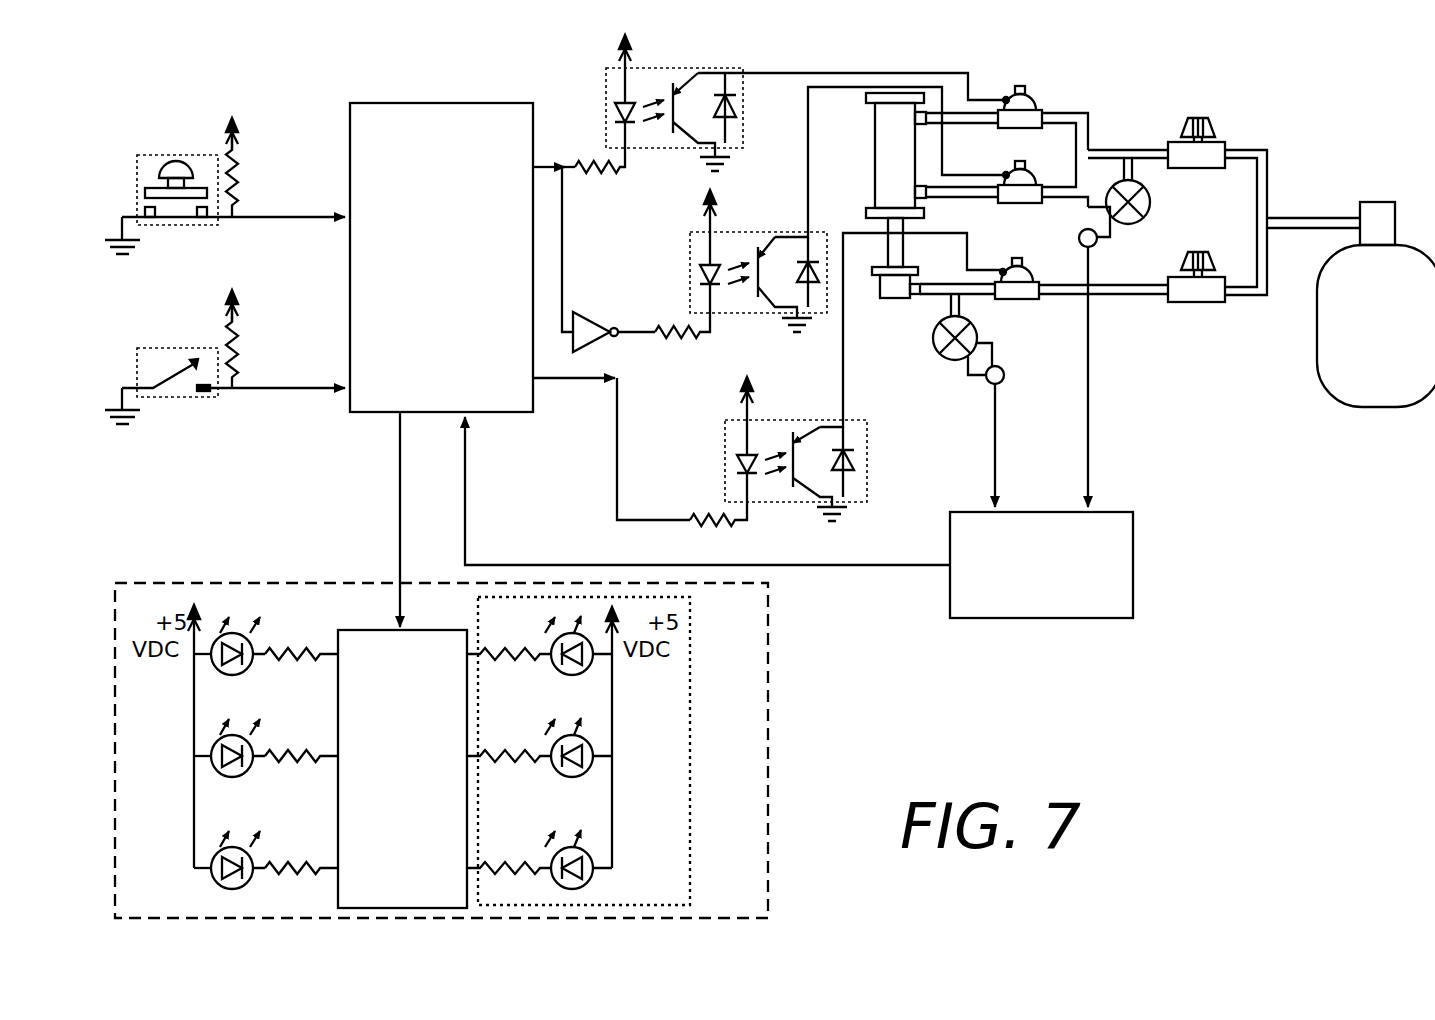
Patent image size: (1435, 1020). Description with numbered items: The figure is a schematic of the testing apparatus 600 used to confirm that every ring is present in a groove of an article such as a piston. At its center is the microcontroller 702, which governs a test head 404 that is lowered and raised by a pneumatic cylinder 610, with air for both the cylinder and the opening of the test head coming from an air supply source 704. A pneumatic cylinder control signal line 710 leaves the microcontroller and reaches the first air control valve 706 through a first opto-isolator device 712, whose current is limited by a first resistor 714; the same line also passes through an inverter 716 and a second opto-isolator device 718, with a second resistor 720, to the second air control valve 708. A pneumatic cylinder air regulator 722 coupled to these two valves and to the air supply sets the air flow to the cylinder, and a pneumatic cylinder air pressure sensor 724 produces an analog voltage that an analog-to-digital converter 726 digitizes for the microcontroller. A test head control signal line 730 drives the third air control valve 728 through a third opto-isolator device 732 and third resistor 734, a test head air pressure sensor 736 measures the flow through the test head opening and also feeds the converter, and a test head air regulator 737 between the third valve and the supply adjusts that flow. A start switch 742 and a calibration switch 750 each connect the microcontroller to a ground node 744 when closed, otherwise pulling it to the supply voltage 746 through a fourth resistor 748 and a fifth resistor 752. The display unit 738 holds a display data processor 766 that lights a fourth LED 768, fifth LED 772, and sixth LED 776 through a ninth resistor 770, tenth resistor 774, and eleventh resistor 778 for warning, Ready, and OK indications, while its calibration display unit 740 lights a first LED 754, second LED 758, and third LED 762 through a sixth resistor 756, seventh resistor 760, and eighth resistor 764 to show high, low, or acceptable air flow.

The testing apparatus 600 is at (1252, 67).
The test head 404 is at (895, 300).
The pneumatic cylinder 610 is at (886, 146).
The microcontroller 702 is at (442, 126).
The air supply source 704 is at (1379, 392).
The first air control valve 706 is at (1037, 102).
The second air control valve 708 is at (1022, 192).
The pneumatic cylinder control signal line 710 is at (561, 162).
The first opto-isolator device 712 is at (654, 66).
The first resistor 714 is at (601, 180).
The inverter 716 is at (590, 311).
The second opto-isolator device 718 is at (740, 231).
The second resistor 720 is at (676, 321).
The pneumatic cylinder air regulator 722 is at (1216, 128).
The pneumatic cylinder air pressure sensor 724 is at (1154, 202).
The analog-to-digital converter 726 is at (1117, 559).
The third air control valve 728 is at (1016, 294).
The test head control signal line 730 is at (579, 384).
The third opto-isolator device 732 is at (772, 419).
The third resistor 734 is at (700, 513).
The test head air pressure sensor 736 is at (945, 365).
The test head air regulator 737 is at (1197, 293).
The display unit 738 is at (773, 790).
The calibration display unit 740 is at (693, 735).
The start switch 742 is at (183, 152).
The ground node 744 is at (142, 249).
The supply voltage 746 is at (241, 115).
The fourth resistor 748 is at (240, 183).
The calibration switch 750 is at (176, 346).
The fifth resistor 752 is at (240, 353).
The first LED 754 is at (551, 668).
The sixth resistor 756 is at (511, 648).
The second LED 758 is at (551, 771).
The seventh resistor 760 is at (511, 748).
The third LED 762 is at (597, 882).
The eighth resistor 764 is at (511, 860).
The display data processor 766 is at (421, 627).
The fourth LED 768 is at (254, 667).
The ninth resistor 770 is at (303, 640).
The fifth LED 772 is at (254, 770).
The tenth resistor 774 is at (303, 743).
The sixth LED 776 is at (254, 882).
The eleventh resistor 778 is at (303, 856).